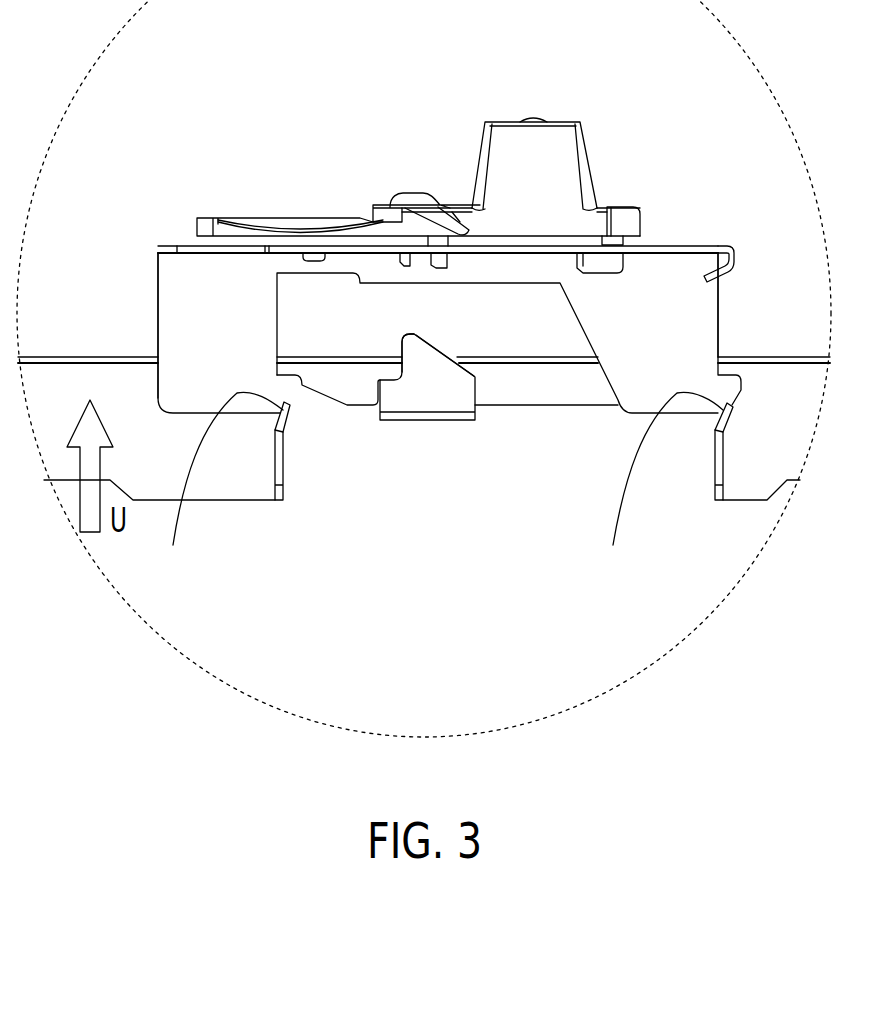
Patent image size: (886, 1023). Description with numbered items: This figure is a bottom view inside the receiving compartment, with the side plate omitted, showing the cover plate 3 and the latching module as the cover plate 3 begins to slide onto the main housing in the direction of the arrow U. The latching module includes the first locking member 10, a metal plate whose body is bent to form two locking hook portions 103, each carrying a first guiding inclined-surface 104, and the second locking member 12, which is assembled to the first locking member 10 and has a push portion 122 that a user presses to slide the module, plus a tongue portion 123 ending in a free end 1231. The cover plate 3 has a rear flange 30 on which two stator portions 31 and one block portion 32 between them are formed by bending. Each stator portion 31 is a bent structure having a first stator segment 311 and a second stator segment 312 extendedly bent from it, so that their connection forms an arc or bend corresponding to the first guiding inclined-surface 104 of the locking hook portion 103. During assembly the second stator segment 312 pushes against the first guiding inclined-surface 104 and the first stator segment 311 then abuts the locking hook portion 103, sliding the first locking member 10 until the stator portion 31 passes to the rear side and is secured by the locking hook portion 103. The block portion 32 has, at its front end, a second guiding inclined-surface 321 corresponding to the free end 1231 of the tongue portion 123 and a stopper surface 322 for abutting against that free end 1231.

The cover plate 3 is at (531, 672).
The first locking member 10 is at (174, 233).
The locking hook portion 103 is at (178, 322).
The first guiding inclined-surface 104 is at (292, 392).
The second locking member 12 is at (602, 155).
The push portion 122 is at (553, 148).
The tongue portion 123 is at (407, 190).
The free end 1231 is at (460, 222).
The rear flange 30 is at (802, 356).
The stator portion 31 is at (250, 578).
The first stator segment 311 is at (275, 460).
The second stator segment 312 is at (437, 485).
The block portion 32 is at (422, 393).
The second guiding inclined-surface 321 is at (433, 347).
The stopper surface 322 is at (402, 350).